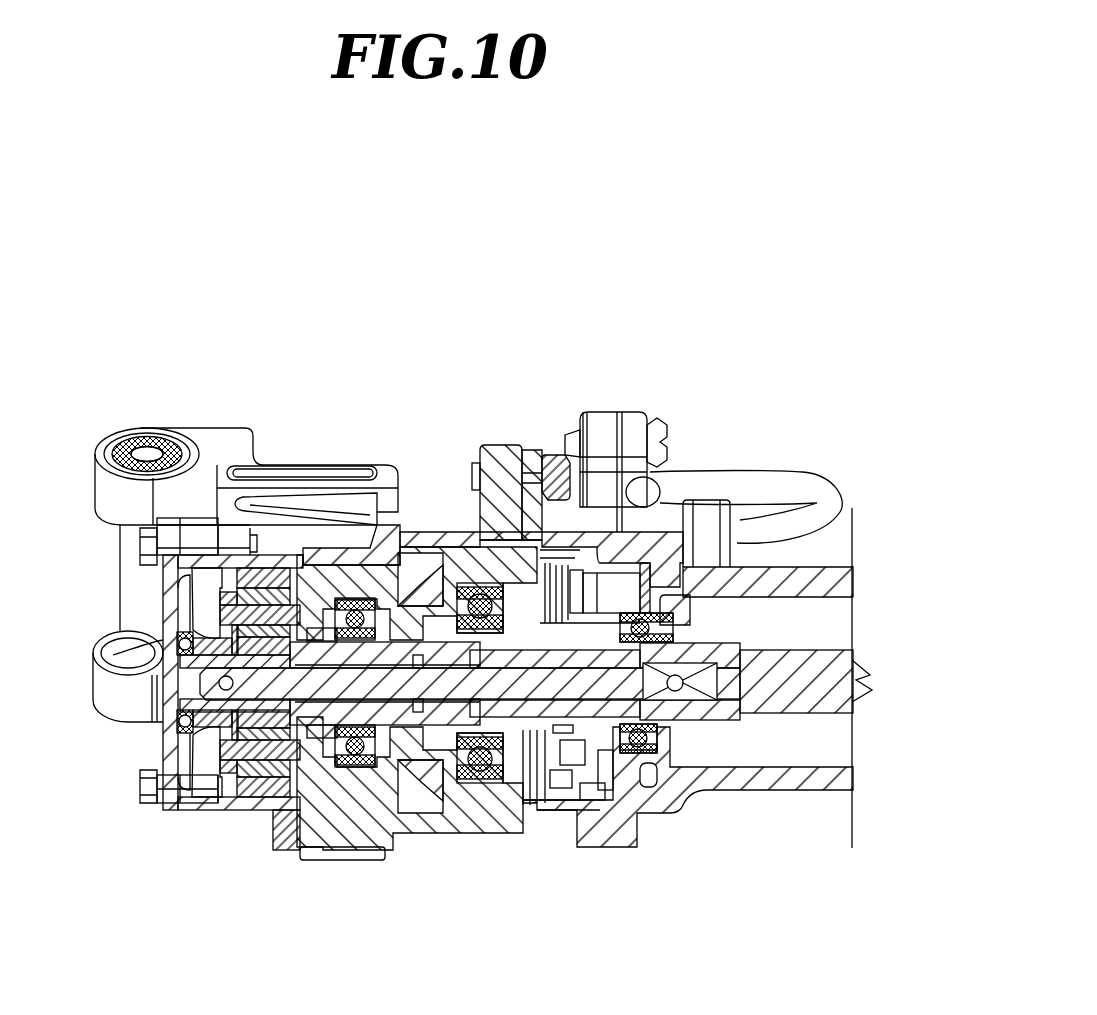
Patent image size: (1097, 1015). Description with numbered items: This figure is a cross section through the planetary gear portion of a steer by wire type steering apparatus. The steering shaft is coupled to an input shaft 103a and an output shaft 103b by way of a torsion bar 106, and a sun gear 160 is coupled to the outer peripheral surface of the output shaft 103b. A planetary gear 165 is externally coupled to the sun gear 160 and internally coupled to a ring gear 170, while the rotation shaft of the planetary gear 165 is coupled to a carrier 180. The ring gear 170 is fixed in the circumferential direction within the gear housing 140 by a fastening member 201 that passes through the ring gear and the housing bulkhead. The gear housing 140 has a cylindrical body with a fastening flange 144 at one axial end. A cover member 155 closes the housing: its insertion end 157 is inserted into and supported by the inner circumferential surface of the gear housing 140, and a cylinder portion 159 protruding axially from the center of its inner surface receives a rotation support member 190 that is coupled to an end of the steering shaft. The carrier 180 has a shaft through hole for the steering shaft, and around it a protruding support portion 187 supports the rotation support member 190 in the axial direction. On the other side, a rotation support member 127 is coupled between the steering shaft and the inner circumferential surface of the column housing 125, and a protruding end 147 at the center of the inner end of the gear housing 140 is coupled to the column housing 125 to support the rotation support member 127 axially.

The input shaft 103a is at (788, 700).
The output shaft 103b is at (423, 723).
The torsion bar 106 is at (567, 693).
The column housing 125 is at (485, 828).
The rotation support member 127 is at (393, 835).
The gear housing 140 is at (242, 815).
The fastening flange 144 is at (315, 833).
The protruding end 147 is at (368, 790).
The cover member 155 is at (168, 598).
The insertion end 157 is at (217, 550).
The cylinder portion 159 is at (180, 620).
The sun gear 160 is at (210, 812).
The planetary gear 165 is at (268, 812).
The ring gear 170 is at (256, 575).
The carrier 180 is at (198, 758).
The protruding support portion 187 is at (192, 742).
The rotation support member 190 is at (97, 668).
The fastening member 201 is at (275, 563).